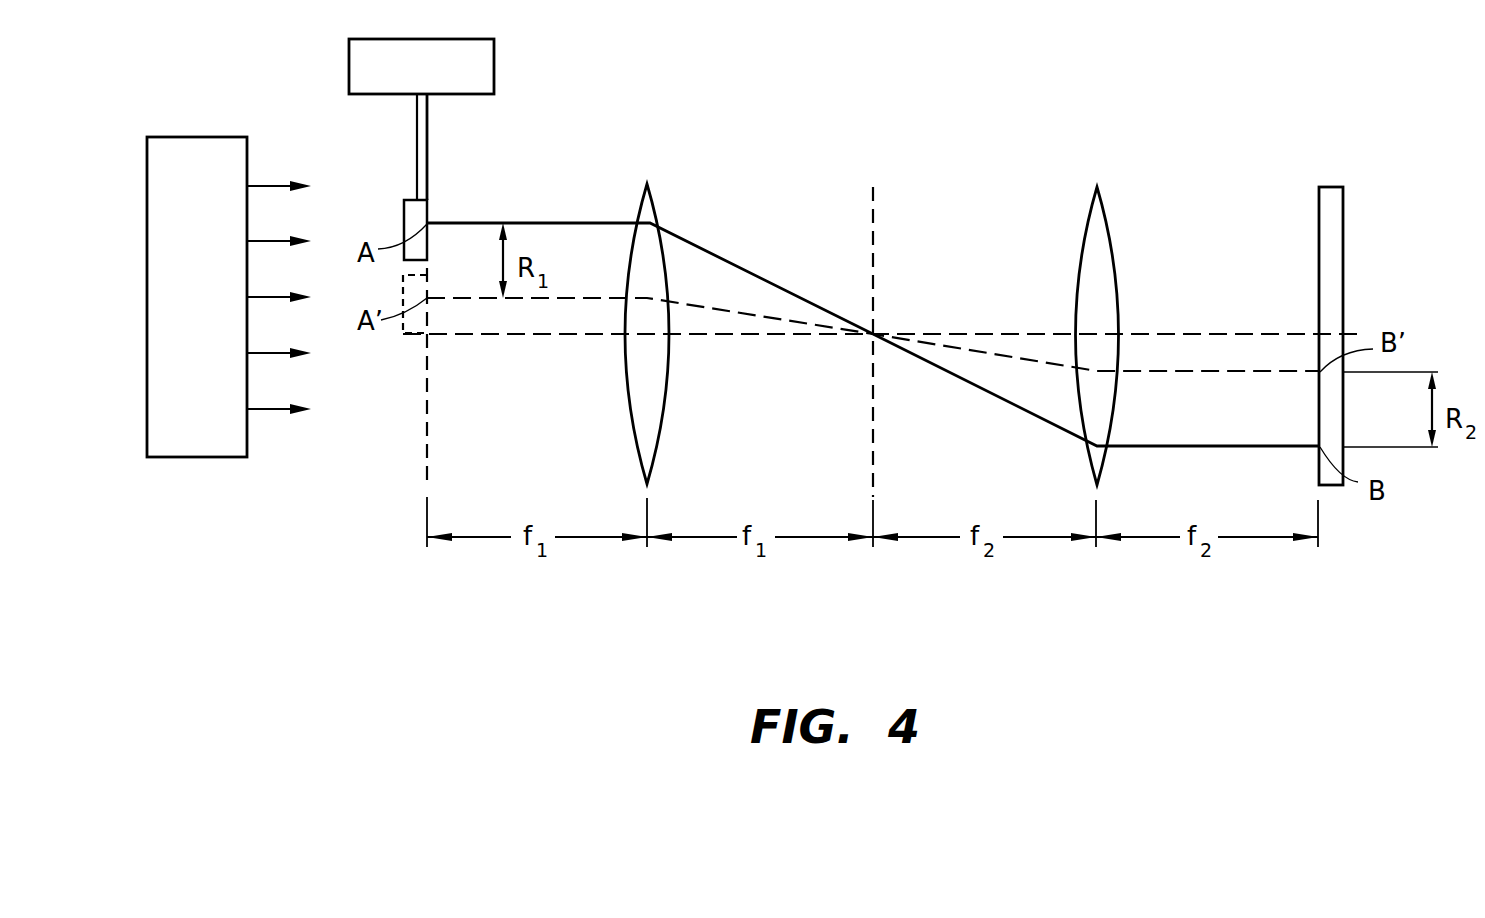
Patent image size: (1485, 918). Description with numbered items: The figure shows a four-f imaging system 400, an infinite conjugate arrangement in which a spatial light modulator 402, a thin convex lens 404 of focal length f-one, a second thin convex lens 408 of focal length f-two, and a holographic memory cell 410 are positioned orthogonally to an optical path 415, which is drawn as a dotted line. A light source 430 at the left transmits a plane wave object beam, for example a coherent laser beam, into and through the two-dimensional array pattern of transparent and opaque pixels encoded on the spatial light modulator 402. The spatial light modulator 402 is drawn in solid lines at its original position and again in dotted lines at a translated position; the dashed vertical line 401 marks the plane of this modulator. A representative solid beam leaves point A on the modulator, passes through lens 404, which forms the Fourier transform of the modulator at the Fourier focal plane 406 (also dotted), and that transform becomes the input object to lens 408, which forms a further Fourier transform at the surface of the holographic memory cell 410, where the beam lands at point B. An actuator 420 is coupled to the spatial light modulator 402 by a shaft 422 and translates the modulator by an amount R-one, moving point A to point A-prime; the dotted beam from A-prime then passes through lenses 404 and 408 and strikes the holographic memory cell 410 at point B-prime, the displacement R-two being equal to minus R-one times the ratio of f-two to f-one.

The 4-f imaging system 400 is at (425, 618).
The object plane 401 is at (425, 432).
The spatial light modulator 402 is at (403, 215).
The thin convex lens 404 is at (652, 204).
The Fourier focal plane 406 is at (874, 214).
The thin convex lens 408 is at (1105, 212).
The holographic memory cell 410 is at (1319, 196).
The optical path 415 is at (1212, 333).
The actuator 420 is at (495, 69).
The shaft 422 is at (430, 128).
The light source 430 is at (199, 137).